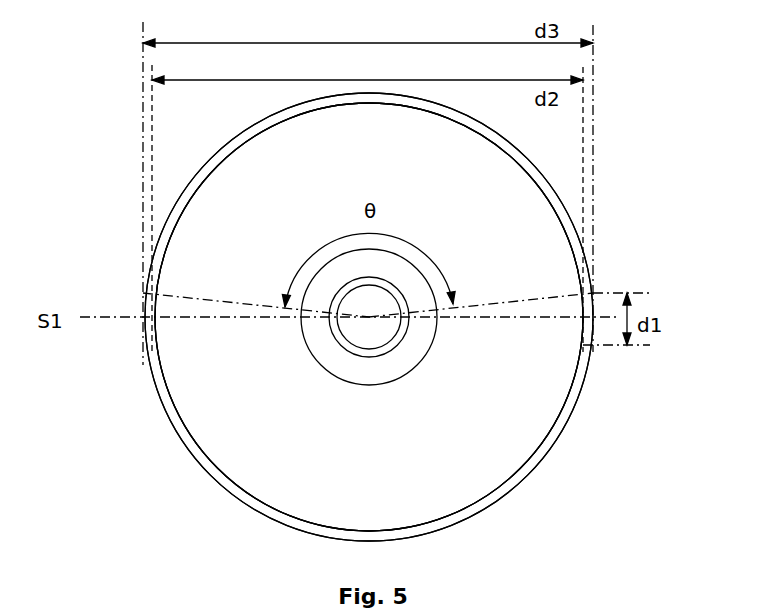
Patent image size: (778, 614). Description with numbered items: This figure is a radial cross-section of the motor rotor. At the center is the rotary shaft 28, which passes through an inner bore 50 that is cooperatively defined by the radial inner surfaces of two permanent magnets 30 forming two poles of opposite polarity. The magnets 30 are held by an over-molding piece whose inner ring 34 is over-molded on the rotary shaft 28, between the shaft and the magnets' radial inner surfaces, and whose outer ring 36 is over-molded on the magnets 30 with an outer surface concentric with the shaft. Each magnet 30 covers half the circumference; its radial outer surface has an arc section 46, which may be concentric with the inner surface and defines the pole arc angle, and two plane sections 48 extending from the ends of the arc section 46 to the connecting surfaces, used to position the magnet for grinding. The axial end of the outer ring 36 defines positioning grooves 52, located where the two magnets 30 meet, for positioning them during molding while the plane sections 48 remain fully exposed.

The rotary shaft 28 is at (370, 338).
The magnets 30 is at (533, 393).
The inner ring 34 is at (328, 342).
The outer ring 36 is at (492, 495).
The arc section 46 is at (292, 518).
The plane sections 48 is at (150, 348).
The inner bore 50 is at (417, 365).
The positioning grooves 52 is at (144, 328).